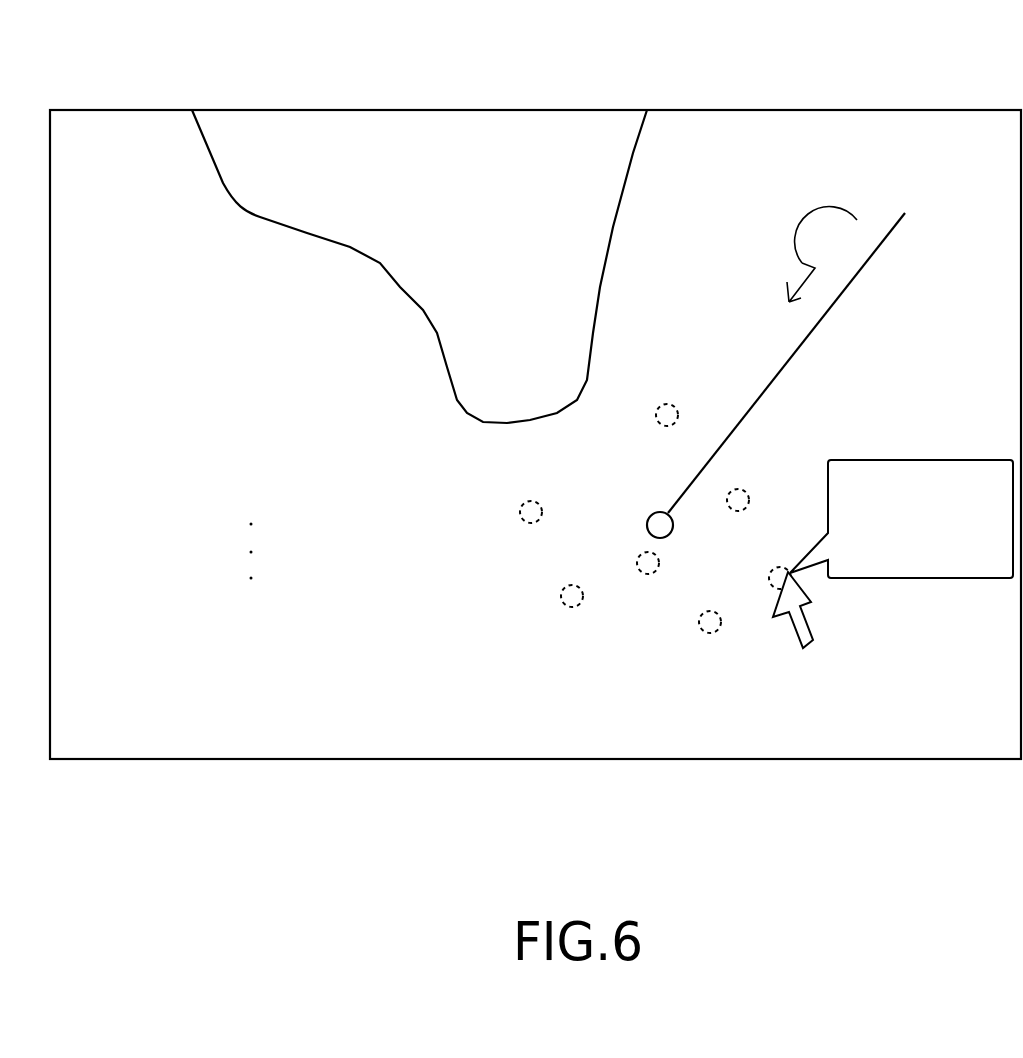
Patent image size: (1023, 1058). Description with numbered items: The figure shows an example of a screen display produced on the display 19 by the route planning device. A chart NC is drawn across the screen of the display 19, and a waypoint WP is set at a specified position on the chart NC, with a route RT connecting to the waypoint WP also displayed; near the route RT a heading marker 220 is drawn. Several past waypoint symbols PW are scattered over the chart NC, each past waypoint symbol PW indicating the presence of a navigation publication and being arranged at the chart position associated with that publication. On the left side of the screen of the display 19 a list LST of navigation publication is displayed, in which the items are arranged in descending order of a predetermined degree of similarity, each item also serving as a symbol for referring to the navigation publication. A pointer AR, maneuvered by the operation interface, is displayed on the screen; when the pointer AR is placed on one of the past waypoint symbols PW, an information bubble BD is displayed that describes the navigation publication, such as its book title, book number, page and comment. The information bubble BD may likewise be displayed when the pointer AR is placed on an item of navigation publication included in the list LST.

The display 19 is at (113, 110).
The chart NC is at (953, 136).
The list of navigation publication LST is at (156, 421).
The route RT is at (783, 368).
The heading marker 220 is at (822, 254).
The waypoint WP is at (655, 520).
The past waypoint symbol PW is at (712, 633).
The information bubble BD is at (935, 468).
The pointer AR is at (797, 622).